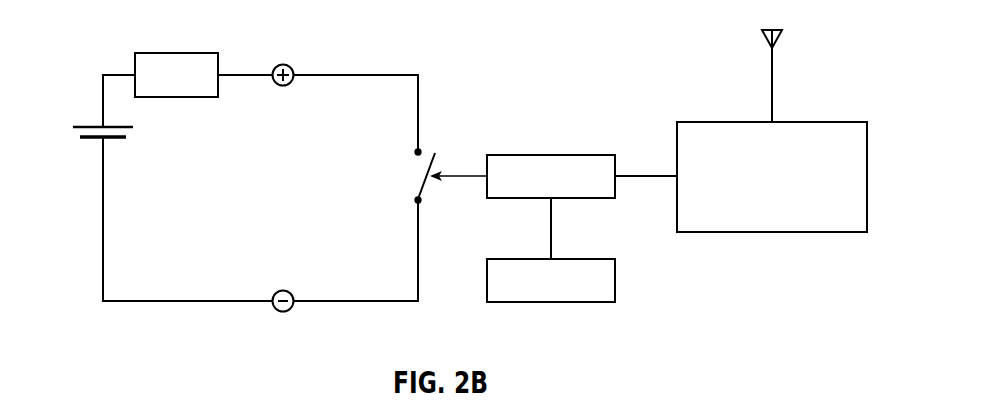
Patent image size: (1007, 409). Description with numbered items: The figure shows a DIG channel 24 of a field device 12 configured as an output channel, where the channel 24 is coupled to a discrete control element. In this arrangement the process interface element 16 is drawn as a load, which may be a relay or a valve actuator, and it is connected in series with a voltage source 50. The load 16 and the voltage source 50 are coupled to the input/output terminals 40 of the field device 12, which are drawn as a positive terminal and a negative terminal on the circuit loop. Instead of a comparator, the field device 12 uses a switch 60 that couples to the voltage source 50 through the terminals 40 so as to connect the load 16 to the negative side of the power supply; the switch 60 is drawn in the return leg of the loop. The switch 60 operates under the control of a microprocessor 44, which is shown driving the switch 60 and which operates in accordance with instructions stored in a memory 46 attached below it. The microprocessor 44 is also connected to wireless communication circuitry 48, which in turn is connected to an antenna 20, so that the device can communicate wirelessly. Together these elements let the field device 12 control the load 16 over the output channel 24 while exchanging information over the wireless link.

The field device 12 is at (330, 38).
The process interface element 16 is at (158, 48).
The antenna 20 is at (834, 8).
The channel 24 is at (210, 327).
The input/output terminals 40 is at (279, 92).
The microprocessor 44 is at (565, 155).
The memory 46 is at (563, 302).
The wireless communication circuitry 48 is at (815, 232).
The voltage source 50 is at (94, 126).
The switch 60 is at (410, 174).